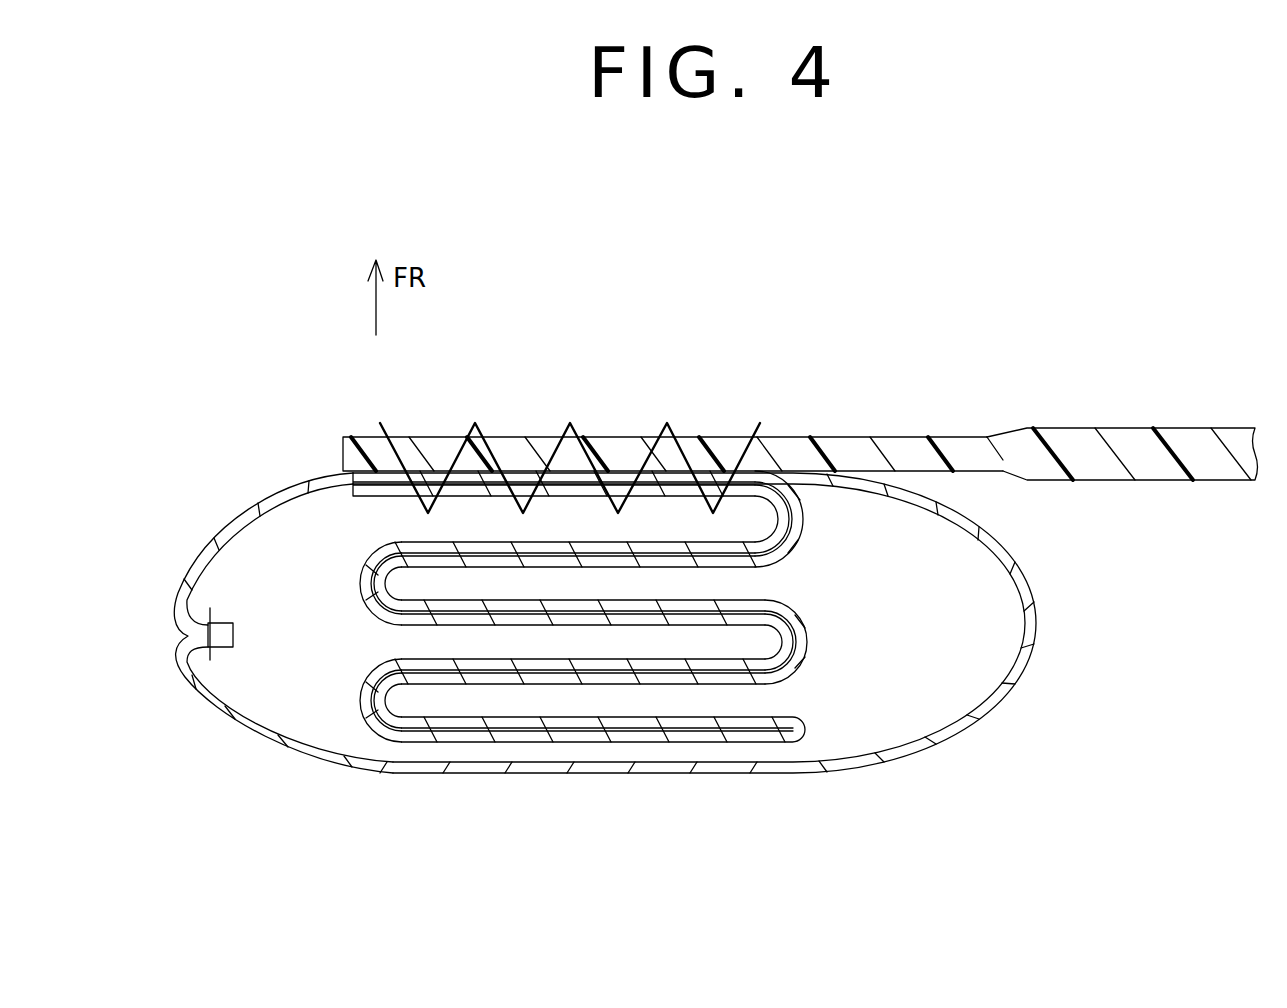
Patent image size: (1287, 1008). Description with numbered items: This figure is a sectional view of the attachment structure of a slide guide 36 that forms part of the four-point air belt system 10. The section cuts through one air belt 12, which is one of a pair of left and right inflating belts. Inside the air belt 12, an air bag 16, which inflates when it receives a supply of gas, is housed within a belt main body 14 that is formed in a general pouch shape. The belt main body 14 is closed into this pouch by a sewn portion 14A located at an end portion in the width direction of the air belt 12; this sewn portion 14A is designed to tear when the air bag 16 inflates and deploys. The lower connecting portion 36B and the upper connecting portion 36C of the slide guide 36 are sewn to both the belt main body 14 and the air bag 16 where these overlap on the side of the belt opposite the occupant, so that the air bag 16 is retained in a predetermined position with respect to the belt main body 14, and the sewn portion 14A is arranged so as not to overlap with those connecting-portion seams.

The four-point air belt system 10 is at (980, 366).
The air belt 12 is at (719, 782).
The belt main body 14 is at (398, 775).
The sewn portion 14A is at (226, 620).
The air bag 16 is at (483, 740).
The slide guide 36 is at (1125, 420).
The lower connecting portion 36B is at (792, 452).
The upper connecting portion 36C is at (570, 468).